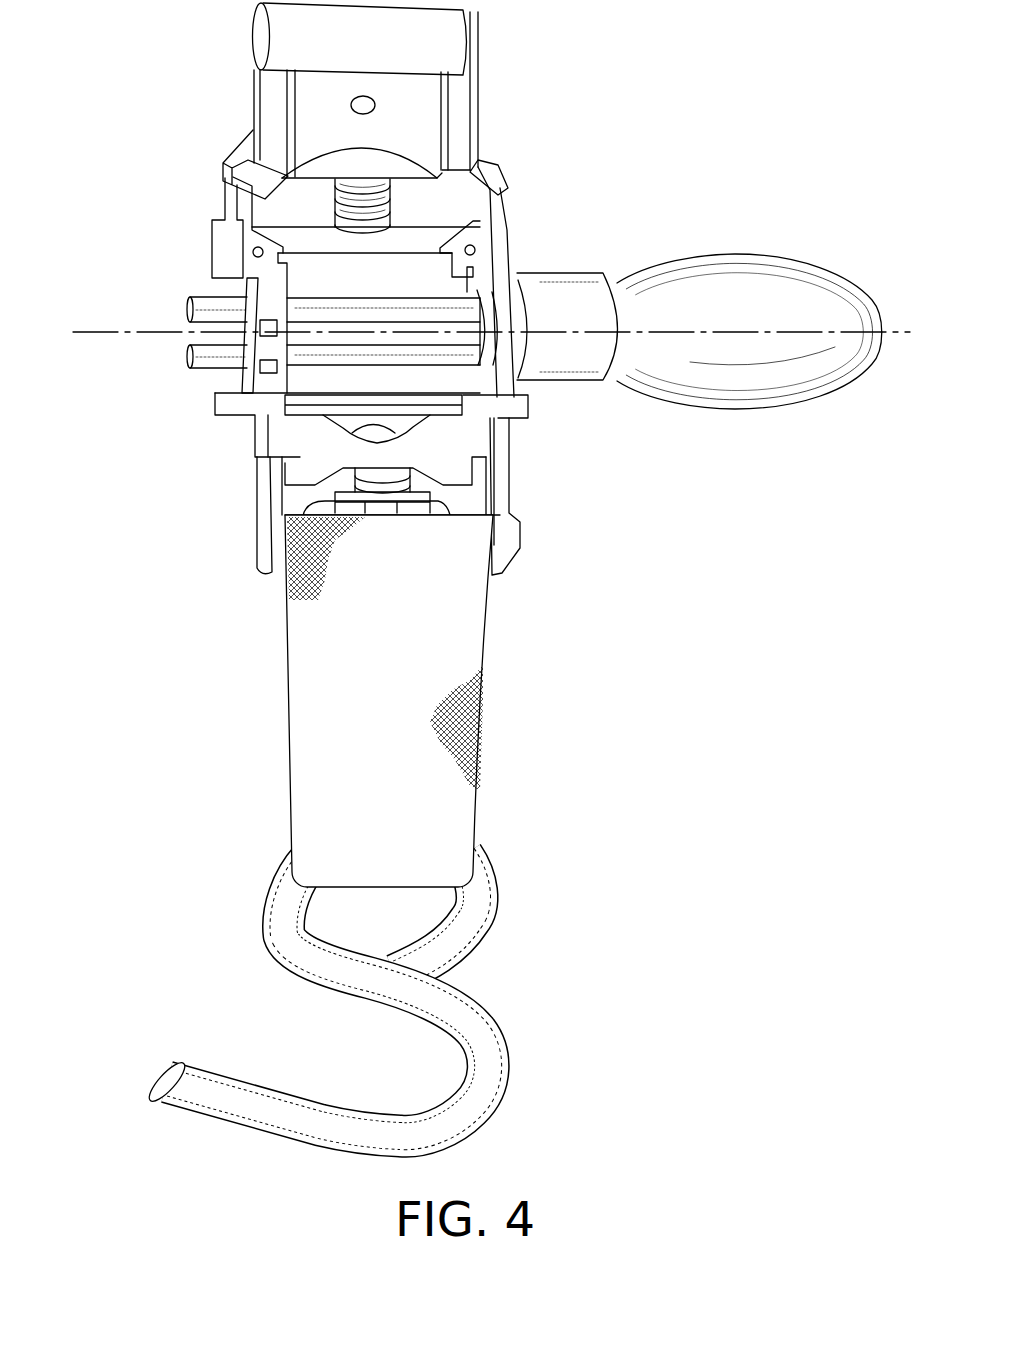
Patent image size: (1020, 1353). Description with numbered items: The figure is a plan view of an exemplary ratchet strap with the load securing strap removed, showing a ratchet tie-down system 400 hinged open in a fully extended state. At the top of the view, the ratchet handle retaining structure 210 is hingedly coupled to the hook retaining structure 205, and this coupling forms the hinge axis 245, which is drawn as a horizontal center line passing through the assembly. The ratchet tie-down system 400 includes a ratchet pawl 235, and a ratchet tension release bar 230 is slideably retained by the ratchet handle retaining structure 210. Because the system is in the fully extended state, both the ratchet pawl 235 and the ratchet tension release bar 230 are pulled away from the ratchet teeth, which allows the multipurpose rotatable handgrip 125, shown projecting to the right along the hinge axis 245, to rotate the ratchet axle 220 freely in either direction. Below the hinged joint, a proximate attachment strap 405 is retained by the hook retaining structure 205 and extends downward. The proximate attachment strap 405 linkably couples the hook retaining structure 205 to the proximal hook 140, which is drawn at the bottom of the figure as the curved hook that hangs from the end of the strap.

The ratchet tie-down system 400 is at (150, 182).
The hinge axis 245 is at (100, 328).
The multipurpose rotatable handgrip 125 is at (746, 254).
The ratchet tension release bar 230 is at (433, 224).
The ratchet handle retaining structure 210 is at (505, 231).
The ratchet axle 220 is at (440, 353).
The ratchet pawl 235 is at (300, 455).
The hook retaining structure 205 is at (512, 536).
The proximal hook 140 is at (497, 1023).
The proximate attachment strap 405 is at (483, 698).